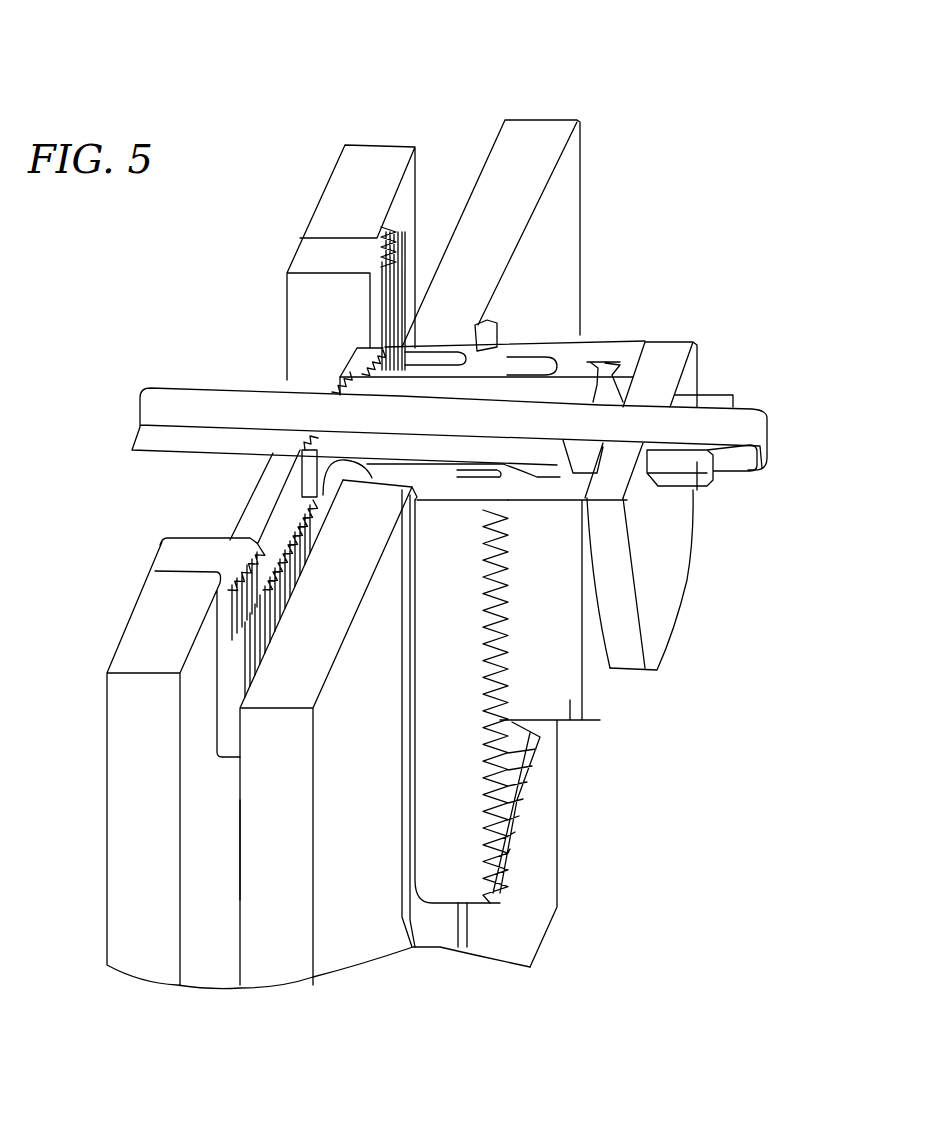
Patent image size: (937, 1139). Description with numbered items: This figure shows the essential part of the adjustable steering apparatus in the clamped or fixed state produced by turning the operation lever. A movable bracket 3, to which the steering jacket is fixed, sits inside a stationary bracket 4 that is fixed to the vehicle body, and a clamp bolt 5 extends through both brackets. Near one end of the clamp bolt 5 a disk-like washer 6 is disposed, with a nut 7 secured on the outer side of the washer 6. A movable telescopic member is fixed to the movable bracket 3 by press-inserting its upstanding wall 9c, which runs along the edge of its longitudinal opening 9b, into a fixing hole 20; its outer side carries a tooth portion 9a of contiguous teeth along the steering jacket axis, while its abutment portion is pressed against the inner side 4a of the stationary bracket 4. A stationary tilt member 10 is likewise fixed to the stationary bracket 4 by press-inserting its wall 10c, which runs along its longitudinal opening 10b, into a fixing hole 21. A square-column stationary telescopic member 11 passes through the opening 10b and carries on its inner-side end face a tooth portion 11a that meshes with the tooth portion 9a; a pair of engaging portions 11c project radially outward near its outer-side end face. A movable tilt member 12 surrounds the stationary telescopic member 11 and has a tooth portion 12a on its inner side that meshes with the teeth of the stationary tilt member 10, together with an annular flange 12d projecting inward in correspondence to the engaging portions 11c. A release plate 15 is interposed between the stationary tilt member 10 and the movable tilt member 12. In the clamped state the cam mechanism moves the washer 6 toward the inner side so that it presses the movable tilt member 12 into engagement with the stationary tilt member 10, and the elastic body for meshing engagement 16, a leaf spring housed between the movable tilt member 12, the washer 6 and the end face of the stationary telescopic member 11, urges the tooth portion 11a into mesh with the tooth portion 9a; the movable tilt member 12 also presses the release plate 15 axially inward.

The movable bracket 3 is at (130, 640).
The stationary bracket 4 is at (487, 197).
The inner side of the stationary bracket 4a is at (237, 845).
The clamp bolt 5 is at (748, 408).
The washer 6 is at (622, 657).
The nut 7 is at (710, 400).
The tooth portion 9a is at (380, 230).
The opening 9b is at (265, 358).
The wall 9c is at (197, 548).
The stationary tilt member 10 is at (463, 820).
The opening 10b is at (445, 867).
The wall 10c is at (400, 475).
The stationary telescopic member 11 is at (528, 390).
The tooth portion 11a is at (337, 377).
The engaging portions 11c is at (583, 375).
The movable tilt member 12 is at (613, 672).
The tooth portion 12a is at (503, 723).
The annular flange 12d is at (587, 498).
The release plate 15 is at (457, 350).
The elastic body for meshing engagement 16 is at (610, 362).
The fixing hole 20 is at (183, 570).
The fixing hole 21 is at (348, 467).